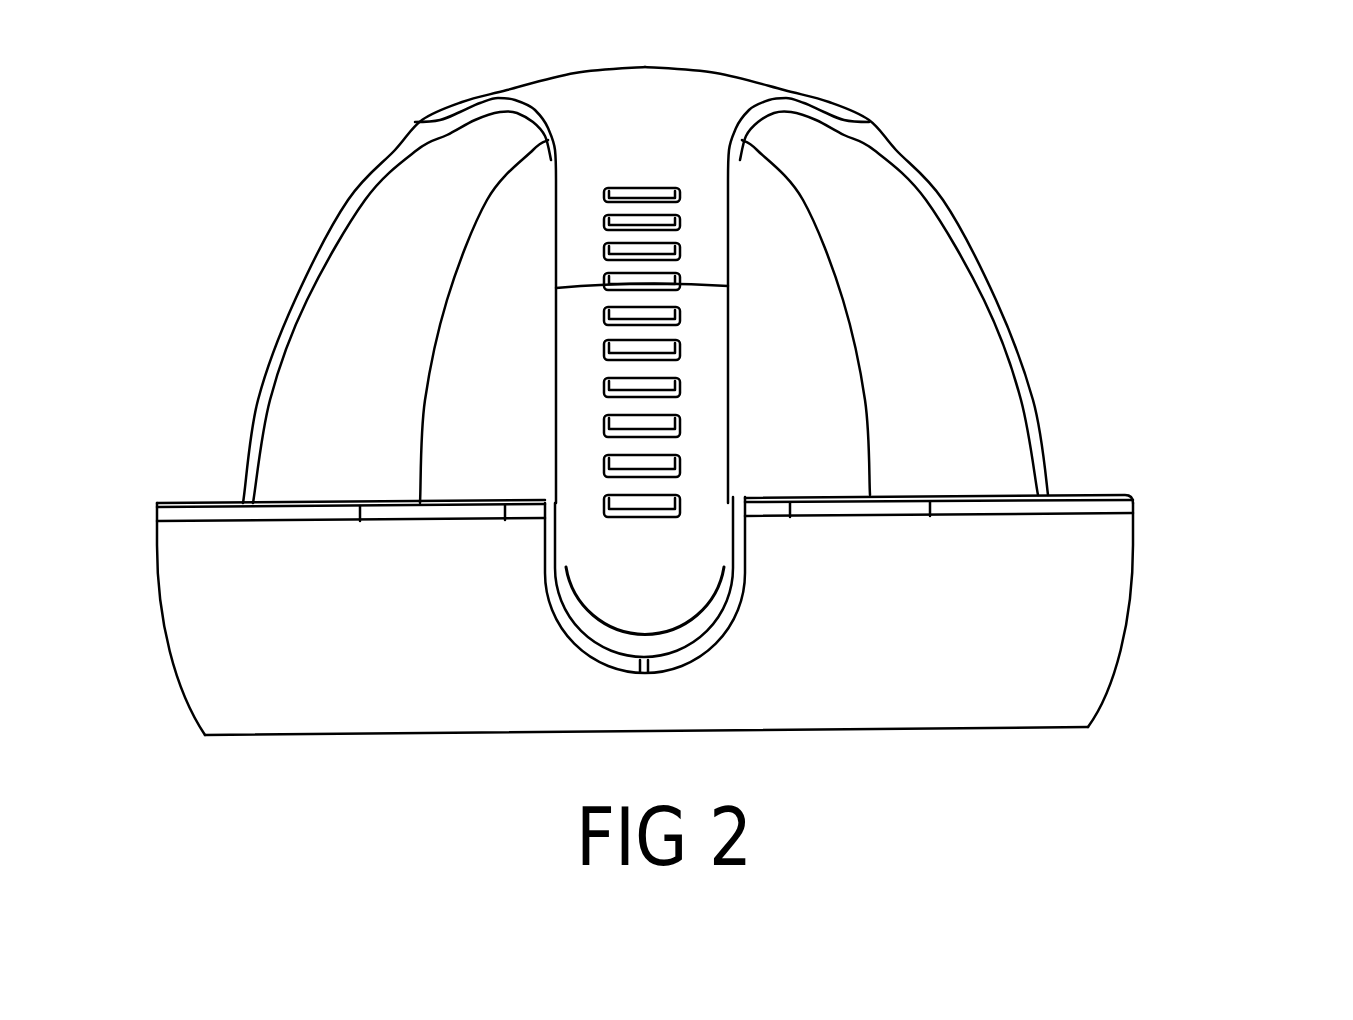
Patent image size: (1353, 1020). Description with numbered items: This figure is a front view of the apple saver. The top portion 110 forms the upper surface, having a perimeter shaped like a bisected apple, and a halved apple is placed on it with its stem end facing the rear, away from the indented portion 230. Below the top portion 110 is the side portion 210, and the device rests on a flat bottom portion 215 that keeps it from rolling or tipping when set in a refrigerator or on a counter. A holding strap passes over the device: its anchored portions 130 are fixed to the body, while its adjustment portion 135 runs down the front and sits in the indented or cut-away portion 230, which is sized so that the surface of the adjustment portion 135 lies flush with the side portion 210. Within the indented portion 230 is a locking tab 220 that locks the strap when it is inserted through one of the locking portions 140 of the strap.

The top portion 110 is at (1078, 493).
The anchored portions of the holding strap 130 is at (330, 393).
The adjustment portion of the holding strap 135 is at (612, 567).
The locking portions of the holding strap 140 is at (680, 347).
The side portion 210 is at (1053, 596).
The flat bottom portion 215 is at (1005, 725).
The locking tab 220 is at (660, 512).
The indented portion 230 is at (643, 637).